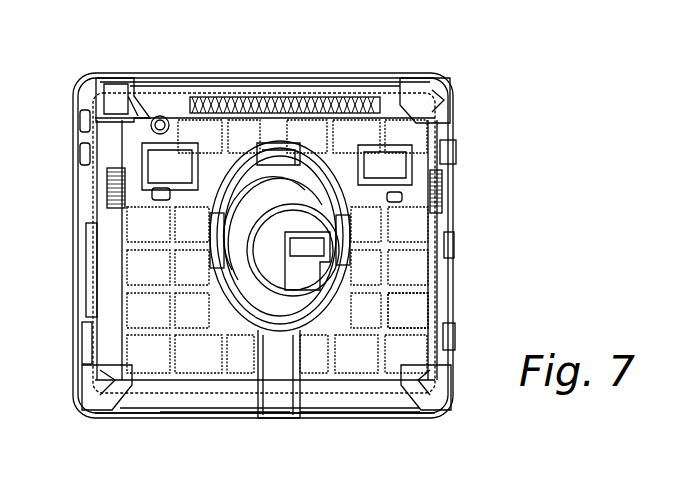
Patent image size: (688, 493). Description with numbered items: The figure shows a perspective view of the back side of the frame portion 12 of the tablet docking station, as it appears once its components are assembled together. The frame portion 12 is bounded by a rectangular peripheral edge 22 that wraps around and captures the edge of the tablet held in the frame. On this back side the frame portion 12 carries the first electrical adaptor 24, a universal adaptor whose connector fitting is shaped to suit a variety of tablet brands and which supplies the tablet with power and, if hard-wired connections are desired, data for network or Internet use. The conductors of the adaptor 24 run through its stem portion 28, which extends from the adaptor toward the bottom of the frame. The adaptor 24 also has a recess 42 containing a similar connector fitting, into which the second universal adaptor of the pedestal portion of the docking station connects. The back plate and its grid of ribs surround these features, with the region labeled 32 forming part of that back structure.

The frame portion 12 is at (450, 78).
The peripheral edge 22 is at (112, 80).
The first electrical adaptor 24 is at (265, 420).
The stem portion 28 is at (282, 360).
The grid panel 32 is at (408, 310).
The recess 42 is at (303, 246).